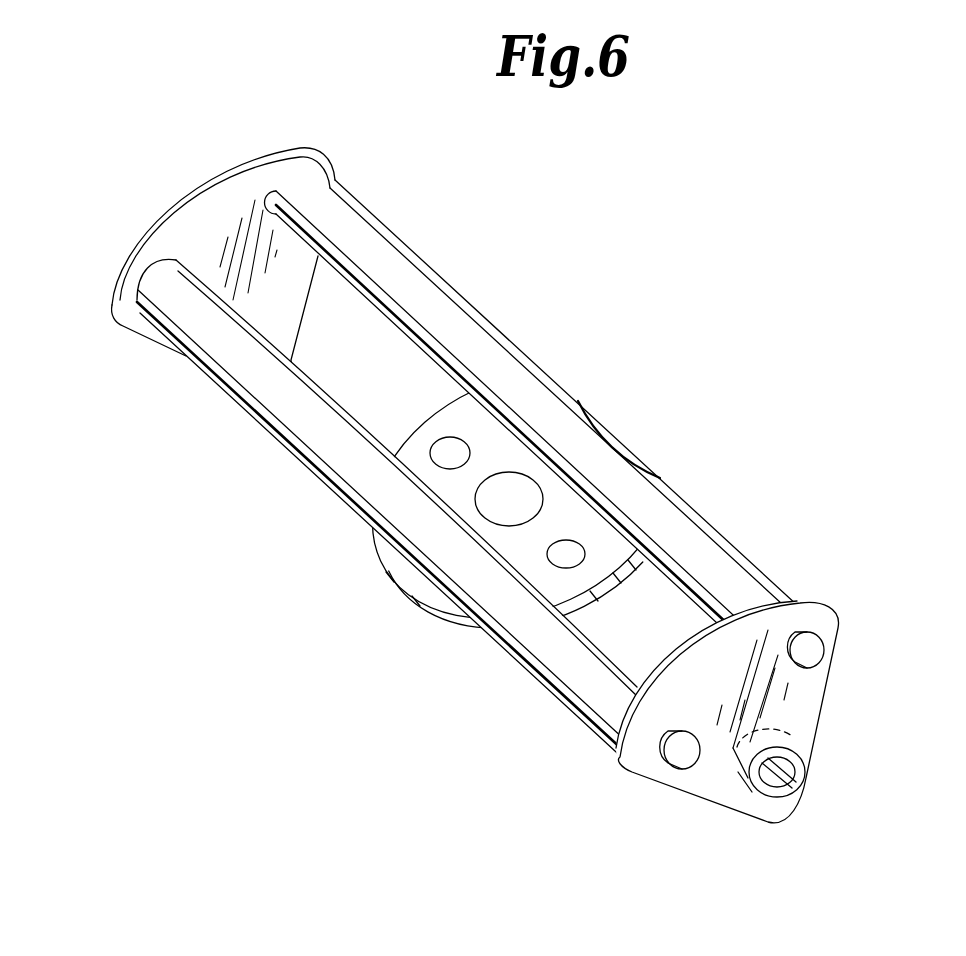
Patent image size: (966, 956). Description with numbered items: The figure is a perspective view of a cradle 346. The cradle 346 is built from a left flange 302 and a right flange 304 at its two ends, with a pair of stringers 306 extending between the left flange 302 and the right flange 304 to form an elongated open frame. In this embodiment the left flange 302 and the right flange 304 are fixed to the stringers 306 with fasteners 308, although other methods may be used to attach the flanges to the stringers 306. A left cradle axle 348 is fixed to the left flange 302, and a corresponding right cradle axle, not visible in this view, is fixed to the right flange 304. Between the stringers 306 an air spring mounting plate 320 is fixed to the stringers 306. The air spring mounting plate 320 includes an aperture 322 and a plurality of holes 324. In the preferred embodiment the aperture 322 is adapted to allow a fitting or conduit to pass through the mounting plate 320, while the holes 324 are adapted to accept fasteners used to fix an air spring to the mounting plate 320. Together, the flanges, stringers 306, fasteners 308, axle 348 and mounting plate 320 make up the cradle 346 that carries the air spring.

The left flange 302 is at (805, 703).
The right flange 304 is at (233, 193).
The stringers 306 is at (407, 280).
The fasteners 308 is at (824, 652).
The air spring mounting plate 320 is at (637, 446).
The aperture 322 is at (503, 512).
The holes 324 is at (463, 448).
The cradle 346 is at (499, 789).
The left cradle axle 348 is at (787, 734).